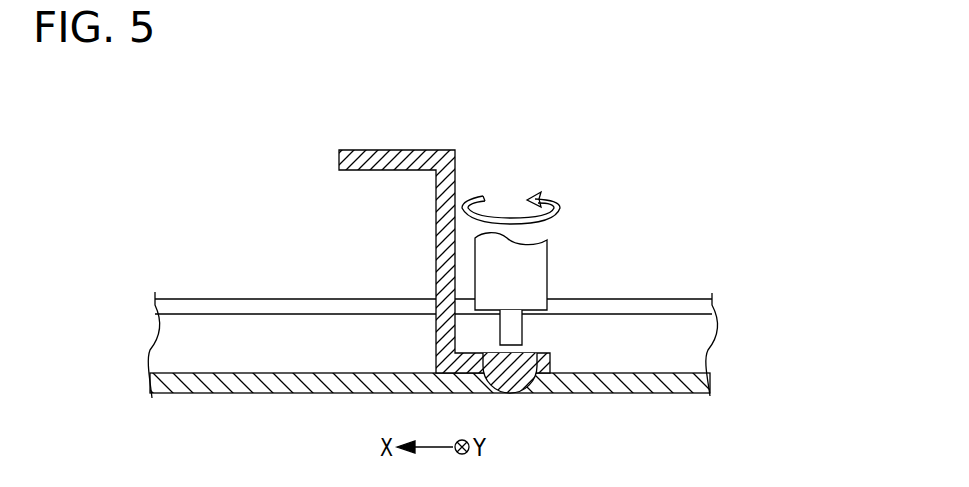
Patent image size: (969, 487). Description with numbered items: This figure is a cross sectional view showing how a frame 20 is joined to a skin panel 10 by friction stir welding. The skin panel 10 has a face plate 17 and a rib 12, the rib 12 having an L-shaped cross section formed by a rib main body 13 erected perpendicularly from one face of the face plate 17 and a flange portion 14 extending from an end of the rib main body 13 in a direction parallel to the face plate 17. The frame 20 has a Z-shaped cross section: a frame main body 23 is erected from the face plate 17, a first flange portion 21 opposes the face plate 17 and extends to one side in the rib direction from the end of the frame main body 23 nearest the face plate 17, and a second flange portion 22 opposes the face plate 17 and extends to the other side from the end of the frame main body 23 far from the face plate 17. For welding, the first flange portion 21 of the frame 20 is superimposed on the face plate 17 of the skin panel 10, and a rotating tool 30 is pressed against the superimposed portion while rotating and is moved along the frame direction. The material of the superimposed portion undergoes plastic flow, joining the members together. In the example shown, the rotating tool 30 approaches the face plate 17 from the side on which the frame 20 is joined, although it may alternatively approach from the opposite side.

The skin panel 10 is at (507, 344).
The rib 12 is at (490, 327).
The rib main body 13 is at (468, 343).
The flange portion 14 is at (712, 307).
The face plate 17 is at (695, 385).
The frame 20 is at (373, 249).
The first flange portion 21 is at (470, 357).
The second flange portion 22 is at (387, 152).
The frame main body 23 is at (447, 210).
The rotating tool 30 is at (537, 272).